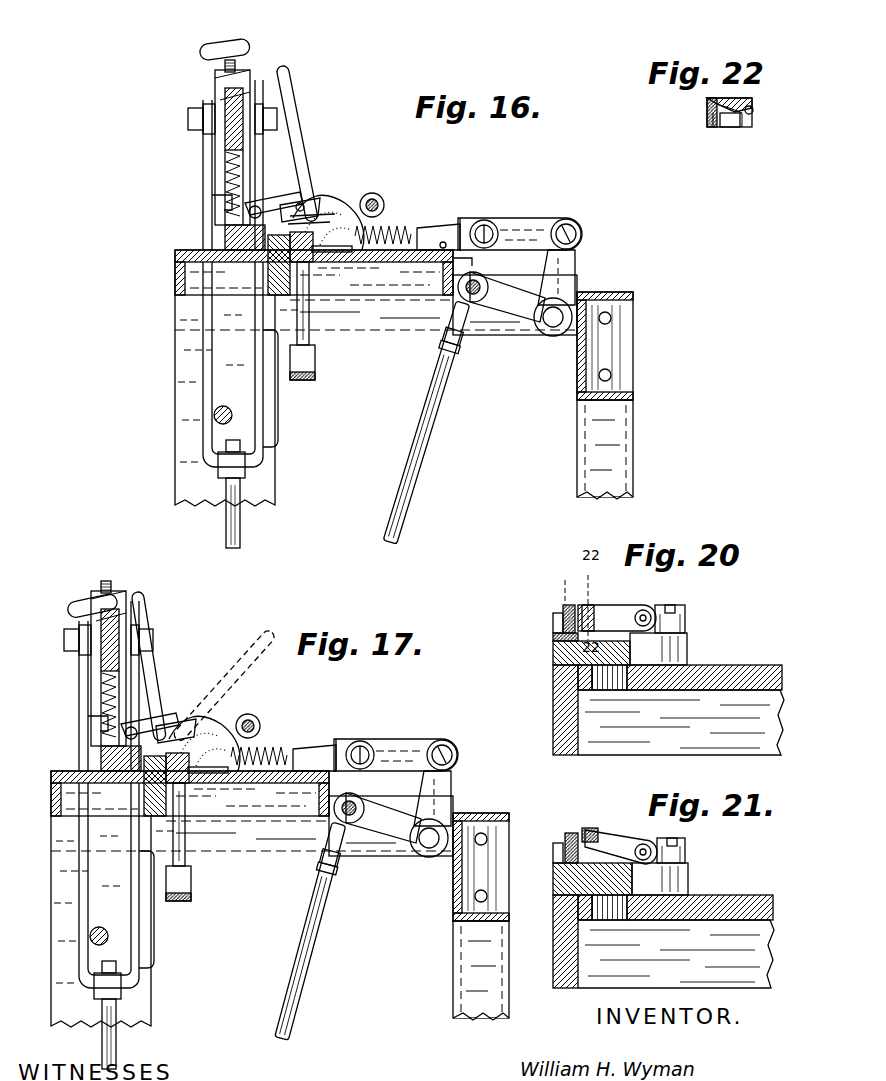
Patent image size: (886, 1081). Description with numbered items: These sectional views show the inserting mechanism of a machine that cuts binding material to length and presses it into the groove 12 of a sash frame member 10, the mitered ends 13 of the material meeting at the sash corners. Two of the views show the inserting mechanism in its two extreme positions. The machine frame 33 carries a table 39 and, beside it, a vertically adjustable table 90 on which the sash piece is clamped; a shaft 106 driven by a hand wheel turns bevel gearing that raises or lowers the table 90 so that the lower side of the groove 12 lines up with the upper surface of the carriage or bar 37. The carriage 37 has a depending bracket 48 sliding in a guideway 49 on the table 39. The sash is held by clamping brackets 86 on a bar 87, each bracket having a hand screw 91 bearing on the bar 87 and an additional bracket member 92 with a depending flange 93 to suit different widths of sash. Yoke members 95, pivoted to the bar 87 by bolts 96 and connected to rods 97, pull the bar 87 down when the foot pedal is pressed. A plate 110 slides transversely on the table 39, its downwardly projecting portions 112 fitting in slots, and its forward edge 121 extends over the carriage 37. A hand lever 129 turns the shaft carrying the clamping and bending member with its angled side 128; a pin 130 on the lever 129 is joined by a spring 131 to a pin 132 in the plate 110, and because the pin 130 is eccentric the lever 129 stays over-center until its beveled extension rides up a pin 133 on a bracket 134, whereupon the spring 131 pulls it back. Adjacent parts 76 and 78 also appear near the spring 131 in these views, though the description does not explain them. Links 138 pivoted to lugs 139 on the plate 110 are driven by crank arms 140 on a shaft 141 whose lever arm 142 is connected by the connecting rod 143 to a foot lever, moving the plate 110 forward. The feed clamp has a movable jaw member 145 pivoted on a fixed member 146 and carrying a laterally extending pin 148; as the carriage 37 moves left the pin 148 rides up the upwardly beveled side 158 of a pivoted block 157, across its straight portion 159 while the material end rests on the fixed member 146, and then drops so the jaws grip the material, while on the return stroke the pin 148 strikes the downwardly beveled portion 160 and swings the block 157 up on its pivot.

In FIG. 16, the frame member 10 is at (224, 239).
In FIG. 17, the frame member 10 is at (84, 760).
In FIG. 16, the groove 12 is at (272, 212).
In FIG. 17, the ends of the binding material 13 is at (163, 706).
In FIG. 16, the frame 33 is at (182, 352).
In FIG. 17, the frame 33 is at (263, 921).
In FIG. 16, the carriage or bar 37 is at (342, 205).
In FIG. 17, the carriage or bar 37 is at (204, 736).
In FIG. 20, the carriage or bar 37 is at (560, 651).
In FIG. 21, the carriage or bar 37 is at (556, 878).
In FIG. 16, the table 39 is at (494, 268).
In FIG. 17, the table 39 is at (252, 816).
In FIG. 20, the table 39 is at (706, 676).
In FIG. 21, the table 39 is at (706, 912).
In FIG. 16, the depending bracket 48 is at (310, 335).
In FIG. 17, the depending bracket 48 is at (194, 842).
In FIG. 16, the guideway 49 is at (318, 262).
In FIG. 17, the guideway 49 is at (195, 798).
In FIG. 16, the pin 76 is at (384, 204).
In FIG. 17, the pin 76 is at (267, 721).
In FIG. 16, the roller 78 is at (378, 195).
In FIG. 17, the roller 78 is at (265, 715).
In FIG. 16, the clamping bracket 86 is at (230, 208).
In FIG. 17, the clamping bracket 86 is at (150, 681).
In FIG. 16, the bar 87 is at (243, 95).
In FIG. 17, the bar 87 is at (97, 668).
In FIG. 16, the vertically adjustable table 90 is at (177, 262).
In FIG. 17, the vertically adjustable table 90 is at (172, 793).
In FIG. 16, the hand screw 91 is at (234, 48).
In FIG. 17, the hand screw 91 is at (96, 586).
In FIG. 16, the bracket member 92 is at (208, 190).
In FIG. 17, the bracket member 92 is at (90, 686).
In FIG. 16, the depending flange 93 is at (222, 206).
In FIG. 17, the depending flange 93 is at (72, 736).
In FIG. 16, the yoke member 95 is at (279, 412).
In FIG. 17, the yoke member 95 is at (127, 885).
In FIG. 16, the bolt 96 is at (188, 118).
In FIG. 16, the rod 97 is at (241, 503).
In FIG. 17, the rod 97 is at (125, 1015).
In FIG. 16, the shaft 106 is at (214, 420).
In FIG. 17, the shaft 106 is at (58, 933).
In FIG. 16, the plate 110 is at (445, 242).
In FIG. 16, the downwardly projecting portion 112 is at (474, 262).
In FIG. 16, the forward edge 121 is at (315, 212).
In FIG. 16, the beveled or angled side 128 is at (298, 205).
In FIG. 17, the beveled or angled side 128 is at (202, 711).
In FIG. 16, the hand lever 129 is at (292, 108).
In FIG. 17, the hand lever 129 is at (203, 667).
In FIG. 16, the pin 130 is at (306, 202).
In FIG. 16, the spring 131 is at (420, 232).
In FIG. 17, the spring 131 is at (303, 744).
In FIG. 16, the pin 132 is at (470, 224).
In FIG. 17, the pin 132 is at (259, 708).
In FIG. 16, the pin 133 is at (264, 200).
In FIG. 17, the pin 133 is at (175, 698).
In FIG. 16, the bracket 134 is at (352, 230).
In FIG. 17, the bracket 134 is at (259, 726).
In FIG. 16, the link 138 is at (556, 219).
In FIG. 17, the link 138 is at (396, 742).
In FIG. 16, the lug 139 is at (466, 218).
In FIG. 17, the lug 139 is at (396, 755).
In FIG. 16, the crank arm 140 is at (570, 264).
In FIG. 17, the crank arm 140 is at (446, 792).
In FIG. 16, the shaft 141 is at (553, 336).
In FIG. 17, the shaft 141 is at (419, 856).
In FIG. 16, the lever arm 142 is at (516, 312).
In FIG. 17, the lever arm 142 is at (377, 840).
In FIG. 16, the adjustable link or connecting rod 143 is at (436, 416).
In FIG. 17, the adjustable link or connecting rod 143 is at (311, 931).
In FIG. 20, the movable jaw member 145 is at (563, 608).
In FIG. 21, the movable jaw member 145 is at (570, 833).
In FIG. 20, the fixed member 146 is at (553, 637).
In FIG. 21, the fixed member 146 is at (553, 853).
In FIG. 22, the laterally extending pin 148 is at (752, 118).
In FIG. 20, the laterally extending pin 148 is at (580, 580).
In FIG. 21, the laterally extending pin 148 is at (578, 834).
In FIG. 22, the block 157 is at (716, 104).
In FIG. 20, the block 157 is at (620, 606).
In FIG. 21, the block 157 is at (628, 841).
In FIG. 22, the upwardly beveled side 158 is at (754, 109).
In FIG. 20, the upwardly beveled side 158 is at (594, 606).
In FIG. 21, the upwardly beveled side 158 is at (596, 828).
In FIG. 22, the straight portion 159 is at (736, 100).
In FIG. 22, the downwardly beveled portion 160 is at (713, 120).